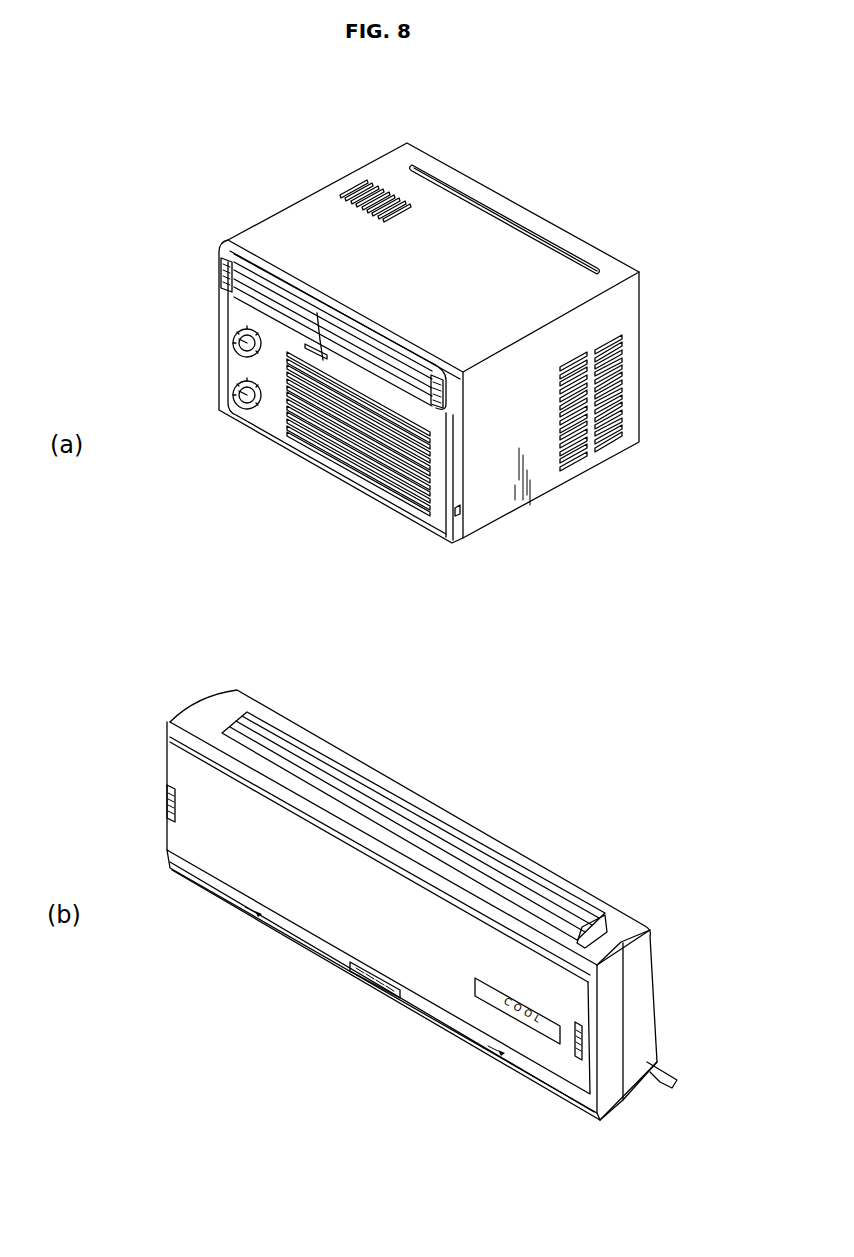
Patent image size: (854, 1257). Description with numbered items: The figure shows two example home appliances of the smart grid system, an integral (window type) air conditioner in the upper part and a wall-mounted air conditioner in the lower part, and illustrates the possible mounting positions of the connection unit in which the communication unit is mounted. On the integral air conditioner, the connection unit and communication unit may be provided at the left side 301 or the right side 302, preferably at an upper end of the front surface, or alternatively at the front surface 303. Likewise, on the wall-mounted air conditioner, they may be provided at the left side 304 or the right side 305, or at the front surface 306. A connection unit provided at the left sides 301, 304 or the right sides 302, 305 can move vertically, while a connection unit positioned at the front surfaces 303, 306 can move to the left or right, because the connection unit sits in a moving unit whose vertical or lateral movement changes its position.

The left side 301 is at (223, 285).
The right side 302 is at (436, 397).
The front surface 303 is at (317, 313).
The left side 304 is at (167, 800).
The right side 305 is at (578, 1045).
The front surface 306 is at (375, 988).